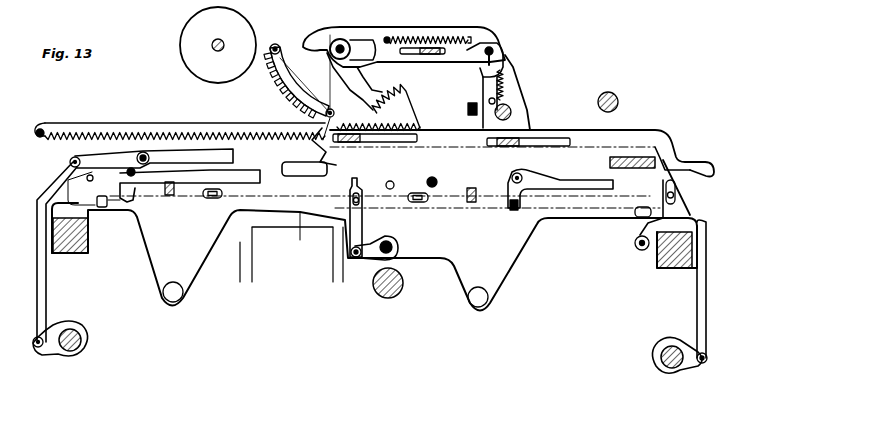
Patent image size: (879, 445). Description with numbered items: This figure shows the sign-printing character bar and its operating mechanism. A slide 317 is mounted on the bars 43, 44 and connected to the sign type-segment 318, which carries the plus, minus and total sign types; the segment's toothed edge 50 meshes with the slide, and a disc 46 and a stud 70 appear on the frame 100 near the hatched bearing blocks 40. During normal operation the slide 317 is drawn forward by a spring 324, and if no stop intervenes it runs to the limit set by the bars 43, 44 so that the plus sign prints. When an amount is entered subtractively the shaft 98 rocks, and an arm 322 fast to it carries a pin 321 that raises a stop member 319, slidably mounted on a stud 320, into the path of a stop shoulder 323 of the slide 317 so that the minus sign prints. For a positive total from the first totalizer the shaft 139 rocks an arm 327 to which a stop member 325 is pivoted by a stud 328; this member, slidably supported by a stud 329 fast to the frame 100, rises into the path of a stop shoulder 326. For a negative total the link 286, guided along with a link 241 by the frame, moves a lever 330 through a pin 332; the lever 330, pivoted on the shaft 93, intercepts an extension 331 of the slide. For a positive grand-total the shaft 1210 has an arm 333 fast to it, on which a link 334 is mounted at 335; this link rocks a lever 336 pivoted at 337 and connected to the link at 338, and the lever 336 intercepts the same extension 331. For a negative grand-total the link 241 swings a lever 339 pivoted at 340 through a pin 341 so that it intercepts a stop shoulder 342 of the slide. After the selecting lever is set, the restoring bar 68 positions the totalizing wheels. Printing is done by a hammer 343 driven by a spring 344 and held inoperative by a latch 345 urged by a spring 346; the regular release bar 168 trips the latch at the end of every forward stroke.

The bearing block 40 is at (90, 250).
The bar 43 is at (336, 143).
The bar 44 is at (500, 146).
The disc 46 is at (228, 81).
The sector teeth 50 is at (282, 98).
The restoring bar 68 is at (636, 168).
The shaft 70 is at (400, 293).
The shaft 93 is at (128, 177).
The shaft 98 is at (394, 245).
The side frame 100 is at (698, 218).
The shaft 139 is at (661, 356).
The release bar 168 is at (468, 108).
The link 241 is at (445, 207).
The link 286 is at (186, 199).
The slide 317 is at (615, 131).
The sign type-segment 318 is at (277, 46).
The stop member 319 is at (352, 190).
The stud 320 is at (362, 202).
The pin 321 is at (352, 252).
The arm 322 is at (357, 259).
The stop shoulder 323 is at (370, 180).
The spring 324 is at (108, 133).
The stop member 325 is at (707, 260).
The stop shoulder 326 is at (706, 175).
The arm 327 is at (678, 372).
The stud 328 is at (708, 357).
The stud 329 is at (676, 196).
The lever 330 is at (232, 183).
The extension 331 is at (310, 140).
The pin 332 is at (122, 203).
The arm 333 is at (68, 323).
The link 334 is at (47, 272).
The pivot connection 335 is at (45, 352).
The lever 336 is at (228, 153).
The pivot 337 is at (150, 152).
The pivot connection 338 is at (75, 157).
The lever 339 is at (538, 172).
The pivot 340 is at (512, 179).
The pin 341 is at (513, 210).
The stop shoulder 342 is at (659, 205).
The hammer 343 is at (370, 30).
The spring 344 is at (432, 39).
The latch 345 is at (503, 50).
The spring 346 is at (504, 84).
The shaft 1210 is at (82, 340).